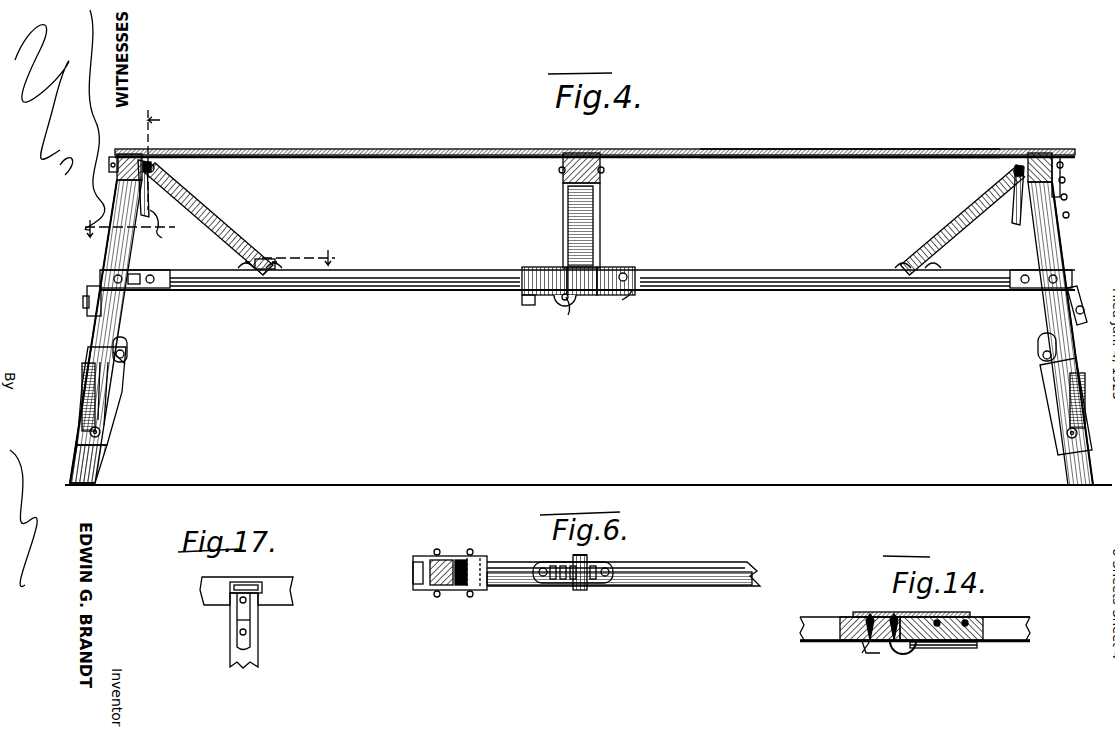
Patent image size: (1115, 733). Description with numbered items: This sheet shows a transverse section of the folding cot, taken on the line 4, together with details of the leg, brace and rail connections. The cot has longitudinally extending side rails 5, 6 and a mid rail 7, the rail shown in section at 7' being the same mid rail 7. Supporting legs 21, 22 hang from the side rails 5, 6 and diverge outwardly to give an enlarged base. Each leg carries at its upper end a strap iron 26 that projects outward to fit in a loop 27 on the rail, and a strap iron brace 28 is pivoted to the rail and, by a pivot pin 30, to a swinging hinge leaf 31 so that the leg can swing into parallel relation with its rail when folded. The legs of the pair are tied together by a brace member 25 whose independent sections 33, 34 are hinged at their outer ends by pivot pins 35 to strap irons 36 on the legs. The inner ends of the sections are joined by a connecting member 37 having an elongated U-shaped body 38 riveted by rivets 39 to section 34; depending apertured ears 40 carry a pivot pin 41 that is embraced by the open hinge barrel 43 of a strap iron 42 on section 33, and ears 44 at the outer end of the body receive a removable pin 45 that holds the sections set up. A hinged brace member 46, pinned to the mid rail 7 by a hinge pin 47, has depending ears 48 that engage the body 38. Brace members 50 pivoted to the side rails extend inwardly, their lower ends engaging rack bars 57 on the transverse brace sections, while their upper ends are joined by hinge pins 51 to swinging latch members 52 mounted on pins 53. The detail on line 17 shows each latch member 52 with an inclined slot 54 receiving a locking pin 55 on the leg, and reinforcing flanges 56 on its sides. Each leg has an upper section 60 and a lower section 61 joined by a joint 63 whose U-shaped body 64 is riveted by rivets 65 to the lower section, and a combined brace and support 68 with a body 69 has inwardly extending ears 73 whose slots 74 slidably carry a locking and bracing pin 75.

In FIG. 4, the section line 4— 4 is at (862, 150).
In FIG. 4, the side rail 5 is at (145, 160).
In FIG. 17, the side rail 5 is at (270, 585).
In FIG. 4, the side rail 6 is at (1075, 150).
In FIG. 4, the mid rail 7 is at (595, 140).
In FIG. 4, the top rail portion 7' is at (850, 136).
In FIG. 4, the section line 17— 17 is at (165, 163).
In FIG. 4, the supporting leg 21 is at (100, 462).
In FIG. 17, the supporting leg 21 is at (261, 660).
In FIG. 6, the supporting leg 21 is at (430, 592).
In FIG. 4, the supporting leg 22 is at (1058, 258).
In FIG. 4, the brace member 25 is at (472, 292).
In FIG. 6, the brace member 25 is at (694, 562).
In FIG. 14, the brace member 25 is at (812, 610).
In FIG. 4, the strap iron 26 is at (1066, 186).
In FIG. 4, the loop 27 is at (1058, 168).
In FIG. 4, the strap iron brace 28 is at (1082, 298).
In FIG. 4, the pivot pin 30 is at (1074, 312).
In FIG. 4, the swinging hinge leaf 31 is at (1076, 336).
In FIG. 4, the brace section 33 is at (355, 292).
In FIG. 6, the brace section 33 is at (666, 590).
In FIG. 14, the brace section 33 is at (822, 641).
In FIG. 4, the brace section 34 is at (846, 291).
In FIG. 14, the brace section 34 is at (1006, 641).
In FIG. 4, the pivot pin 35 is at (126, 290).
In FIG. 6, the pivot pin 35 is at (474, 554).
In FIG. 4, the strap iron 36 is at (130, 270).
In FIG. 6, the strap iron 36 is at (470, 592).
In FIG. 4, the connecting member 37 is at (632, 292).
In FIG. 14, the connecting member 37 is at (868, 618).
In FIG. 4, the elongated body 38 is at (618, 265).
In FIG. 14, the elongated body 38 is at (950, 614).
In FIG. 4, the rivets 39 is at (630, 272).
In FIG. 14, the rivets 39 is at (972, 620).
In FIG. 4, the depending apertured ears 40 is at (580, 319).
In FIG. 14, the depending apertured ears 40 is at (945, 650).
In FIG. 4, the pivot pin 41 is at (578, 300).
In FIG. 14, the pivot pin 41 is at (900, 655).
In FIG. 14, the strap iron 42 is at (892, 642).
In FIG. 14, the open hinge barrel 43 is at (943, 654).
In FIG. 4, the ears 44 is at (528, 306).
In FIG. 14, the ears 44 is at (866, 646).
In FIG. 4, the removable pin 45 is at (514, 276).
In FIG. 14, the removable pin 45 is at (868, 618).
In FIG. 4, the hinged brace member 46 is at (598, 225).
In FIG. 4, the hinge pin 47 is at (604, 170).
In FIG. 4, the depending ears 48 is at (560, 268).
In FIG. 4, the brace member 50 is at (218, 213).
In FIG. 17, the brace member 50 is at (230, 584).
In FIG. 6, the brace member 50 is at (584, 592).
In FIG. 4, the hinge pin 51 is at (155, 165).
In FIG. 4, the swinging latch member 52 is at (152, 180).
In FIG. 17, the swinging latch member 52 is at (255, 625).
In FIG. 4, the pin 53 is at (160, 172).
In FIG. 17, the pin 53 is at (250, 600).
In FIG. 17, the inclined slot 54 is at (238, 628).
In FIG. 4, the locking pin 55 is at (140, 240).
In FIG. 17, the locking pin 55 is at (240, 634).
In FIG. 4, the reinforcing flanges 56 is at (243, 248).
In FIG. 6, the reinforcing flanges 56 is at (590, 558).
In FIG. 4, the rack bar 57 is at (280, 260).
In FIG. 6, the rack bar 57 is at (548, 584).
In FIG. 4, the upper leg section 60 is at (112, 247).
In FIG. 4, the lower leg section 61 is at (85, 452).
In FIG. 4, the joint 63 is at (1060, 385).
In FIG. 4, the elongated body portion 64 is at (106, 410).
In FIG. 4, the rivets 65 is at (101, 433).
In FIG. 4, the combined brace and support 68 is at (90, 372).
In FIG. 4, the body 69 is at (103, 392).
In FIG. 4, the inwardly extending ears 73 is at (130, 352).
In FIG. 4, the slots 74 is at (128, 342).
In FIG. 4, the locking and bracing pin 75 is at (128, 362).